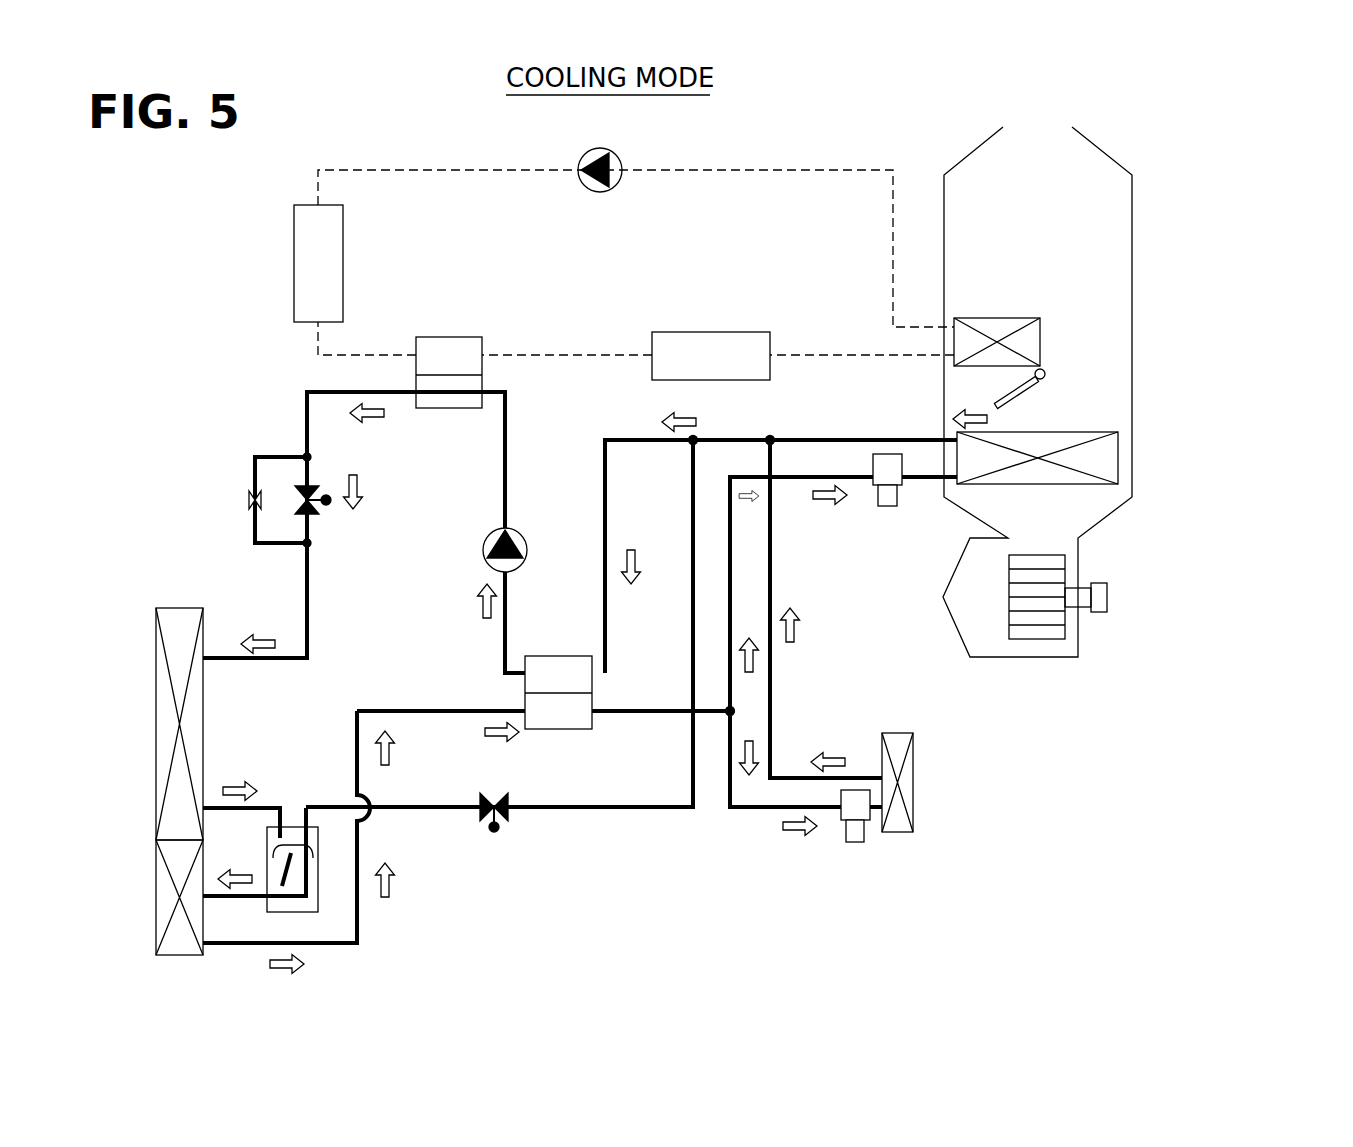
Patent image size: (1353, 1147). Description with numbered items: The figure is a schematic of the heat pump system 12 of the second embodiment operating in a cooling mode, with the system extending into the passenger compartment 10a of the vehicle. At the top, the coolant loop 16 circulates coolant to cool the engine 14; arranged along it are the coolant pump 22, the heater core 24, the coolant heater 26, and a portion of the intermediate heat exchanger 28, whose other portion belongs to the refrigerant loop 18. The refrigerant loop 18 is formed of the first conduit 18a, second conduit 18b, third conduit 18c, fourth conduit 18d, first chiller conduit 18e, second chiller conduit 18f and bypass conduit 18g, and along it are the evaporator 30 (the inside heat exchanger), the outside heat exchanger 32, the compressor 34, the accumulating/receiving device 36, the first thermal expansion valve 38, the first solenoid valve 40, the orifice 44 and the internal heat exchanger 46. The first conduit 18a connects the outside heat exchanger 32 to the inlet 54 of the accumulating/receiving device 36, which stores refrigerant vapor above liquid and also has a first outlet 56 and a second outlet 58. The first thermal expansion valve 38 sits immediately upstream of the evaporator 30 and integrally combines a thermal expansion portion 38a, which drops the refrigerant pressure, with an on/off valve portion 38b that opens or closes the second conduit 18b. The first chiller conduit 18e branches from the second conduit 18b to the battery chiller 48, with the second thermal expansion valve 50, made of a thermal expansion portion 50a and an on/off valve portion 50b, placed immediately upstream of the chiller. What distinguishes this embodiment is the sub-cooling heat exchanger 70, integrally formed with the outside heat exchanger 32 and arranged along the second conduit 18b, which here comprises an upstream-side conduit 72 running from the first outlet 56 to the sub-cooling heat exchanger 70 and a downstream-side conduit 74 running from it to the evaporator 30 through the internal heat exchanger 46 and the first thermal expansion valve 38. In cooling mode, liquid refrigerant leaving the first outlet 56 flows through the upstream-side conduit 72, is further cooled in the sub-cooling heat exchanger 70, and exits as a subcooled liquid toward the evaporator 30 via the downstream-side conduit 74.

The passenger compartment 10a is at (1187, 288).
The heat pump system 12 is at (850, 138).
The engine 14 is at (343, 237).
The coolant loop 16 is at (418, 157).
The refrigerant loop 18 is at (580, 668).
The first conduit 18a is at (268, 800).
The second conduit 18b is at (430, 710).
The third conduit 18c is at (606, 497).
The fourth conduit 18d is at (309, 597).
The first chiller conduit 18e is at (753, 812).
The second chiller conduit 18f is at (805, 776).
The bypass conduit 18g is at (657, 812).
The coolant pump 22 is at (617, 158).
The heater core 24 is at (1022, 318).
The coolant heater 26 is at (753, 332).
The intermediate heat exchanger 28 is at (457, 337).
The evaporator 30 is at (1118, 458).
The outside heat exchanger 32 is at (155, 660).
The compressor 34 is at (486, 570).
The accumulating/receiving device 36 is at (295, 868).
The first thermal expansion valve 38 is at (875, 470).
The thermal expansion portion 38a is at (873, 466).
The on/off valve portion 38b is at (892, 506).
The first solenoid valve 40 is at (494, 834).
The orifice 44 is at (250, 509).
The internal heat exchanger 46 is at (590, 700).
The battery chiller 48 is at (910, 719).
The second thermal expansion valve 50 is at (861, 788).
The thermal expansion portion 50a is at (862, 815).
The on/off valve portion 50b is at (857, 843).
The inlet 54 is at (267, 818).
The first outlet 56 is at (268, 905).
The second outlet 58 is at (302, 826).
The sub-cooling heat exchanger 70 is at (185, 949).
The upstream-side conduit 72 is at (243, 898).
The downstream-side conduit 74 is at (358, 925).